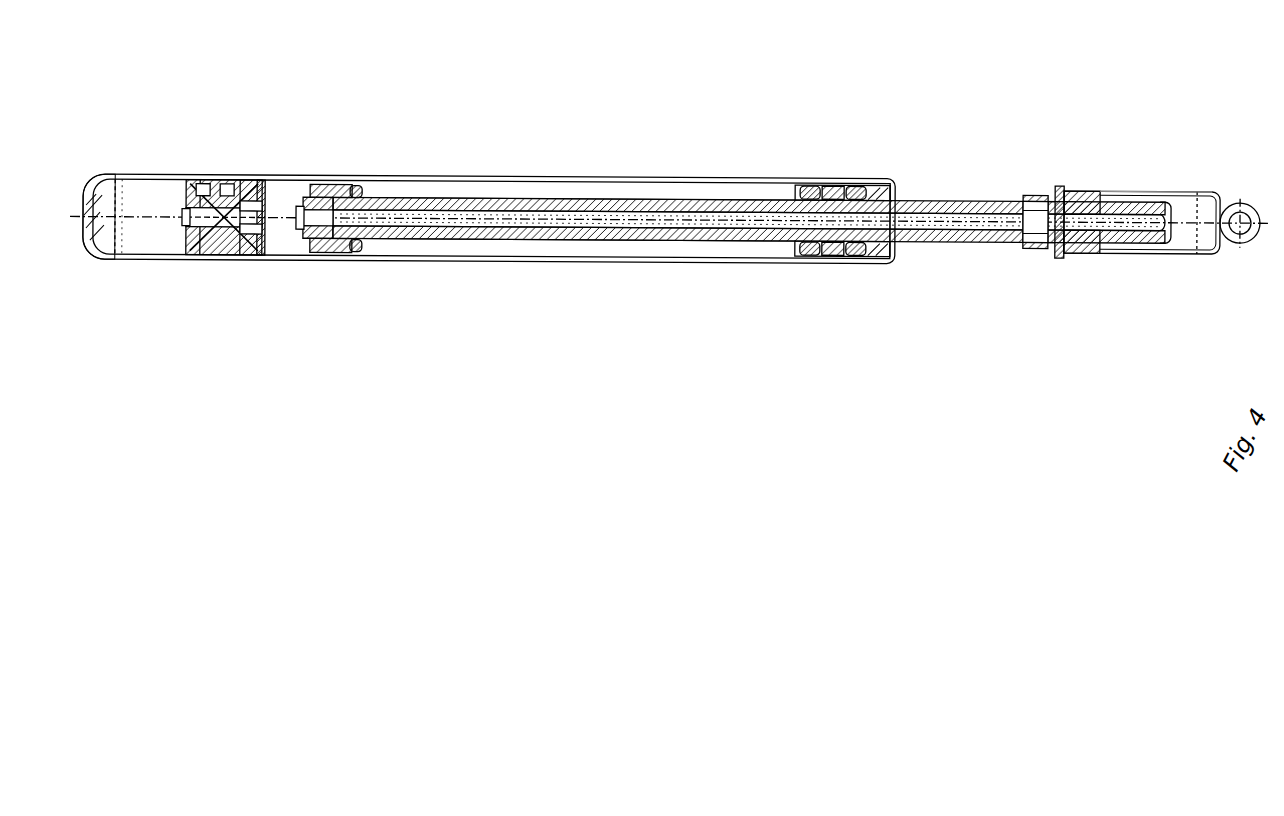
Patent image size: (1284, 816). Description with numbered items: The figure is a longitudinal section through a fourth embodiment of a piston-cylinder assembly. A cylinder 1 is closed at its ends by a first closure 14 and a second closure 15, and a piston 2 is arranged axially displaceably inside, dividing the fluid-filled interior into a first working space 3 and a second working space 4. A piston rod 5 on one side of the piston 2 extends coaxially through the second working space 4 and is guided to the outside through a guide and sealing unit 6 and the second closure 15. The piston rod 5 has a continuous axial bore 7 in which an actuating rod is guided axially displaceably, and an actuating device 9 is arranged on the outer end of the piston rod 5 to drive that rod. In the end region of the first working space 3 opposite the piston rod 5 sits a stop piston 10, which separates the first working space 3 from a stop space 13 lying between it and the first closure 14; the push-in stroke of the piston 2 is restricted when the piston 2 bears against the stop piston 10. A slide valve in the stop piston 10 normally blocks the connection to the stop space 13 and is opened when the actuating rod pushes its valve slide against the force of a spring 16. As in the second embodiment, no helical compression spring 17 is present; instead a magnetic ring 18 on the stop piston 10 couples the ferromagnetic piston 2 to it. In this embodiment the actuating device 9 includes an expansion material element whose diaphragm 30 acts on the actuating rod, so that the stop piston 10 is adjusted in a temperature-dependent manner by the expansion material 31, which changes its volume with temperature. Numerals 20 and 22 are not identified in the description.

The cylinder 1 is at (750, 262).
The piston 2 is at (340, 262).
The first working space 3 is at (303, 258).
The second working space 4 is at (610, 250).
The piston rod 5 is at (721, 242).
The guide and sealing unit 6 is at (822, 262).
The axial bore 7 is at (686, 232).
The actuating device 9 is at (1124, 298).
The stop piston 10 is at (651, 220).
The stop space 13 is at (150, 232).
The first closure 14 is at (96, 262).
The second closure 15 is at (877, 262).
The spring 16 is at (247, 256).
The helical compression spring 17 is at (228, 175).
The magnetic ring 18 is at (263, 258).
The valve opening 20 is at (205, 175).
The force direction 22 is at (1137, 186).
The diaphragm 30 is at (1165, 258).
The expansion material 31 is at (1197, 210).